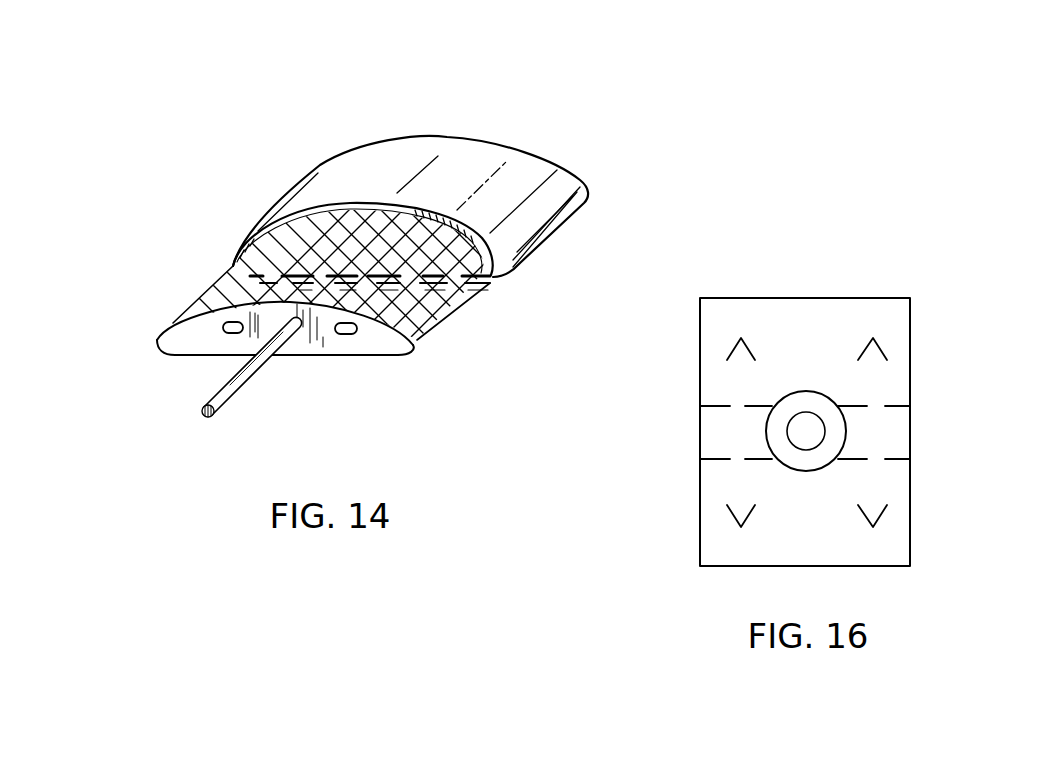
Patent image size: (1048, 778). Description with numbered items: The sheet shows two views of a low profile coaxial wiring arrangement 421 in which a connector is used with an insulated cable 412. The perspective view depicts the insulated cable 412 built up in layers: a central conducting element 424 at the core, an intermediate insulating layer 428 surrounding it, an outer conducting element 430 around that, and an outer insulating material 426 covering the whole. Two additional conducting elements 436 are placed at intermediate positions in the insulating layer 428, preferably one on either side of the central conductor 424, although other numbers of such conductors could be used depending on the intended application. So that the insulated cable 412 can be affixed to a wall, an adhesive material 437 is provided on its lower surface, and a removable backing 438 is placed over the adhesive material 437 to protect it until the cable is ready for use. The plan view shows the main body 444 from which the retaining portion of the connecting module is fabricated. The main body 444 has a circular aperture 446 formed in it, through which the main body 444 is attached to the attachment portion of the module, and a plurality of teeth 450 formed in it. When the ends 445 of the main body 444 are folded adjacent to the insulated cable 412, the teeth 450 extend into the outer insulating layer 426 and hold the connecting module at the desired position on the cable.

In FIG. 14, the electrode assembly 421 is at (288, 123).
In FIG. 14, the outer insulating material 426 is at (465, 152).
In FIG. 14, the insulated cable 412 is at (567, 172).
In FIG. 14, the outer conducting element 430 is at (242, 285).
In FIG. 14, the adhesive material 437 is at (452, 313).
In FIG. 14, the removable backing 438 is at (483, 293).
In FIG. 14, the intermediate insulating layer 428 is at (387, 353).
In FIG. 14, the central conducting element 424 is at (222, 390).
In FIG. 14, the additional conducting elements 436 is at (222, 338).
In FIG. 16, the main body 444 is at (811, 328).
In FIG. 16, the ends 445 is at (712, 312).
In FIG. 16, the circular aperture 446 is at (838, 440).
In FIG. 16, the teeth 450 is at (733, 352).